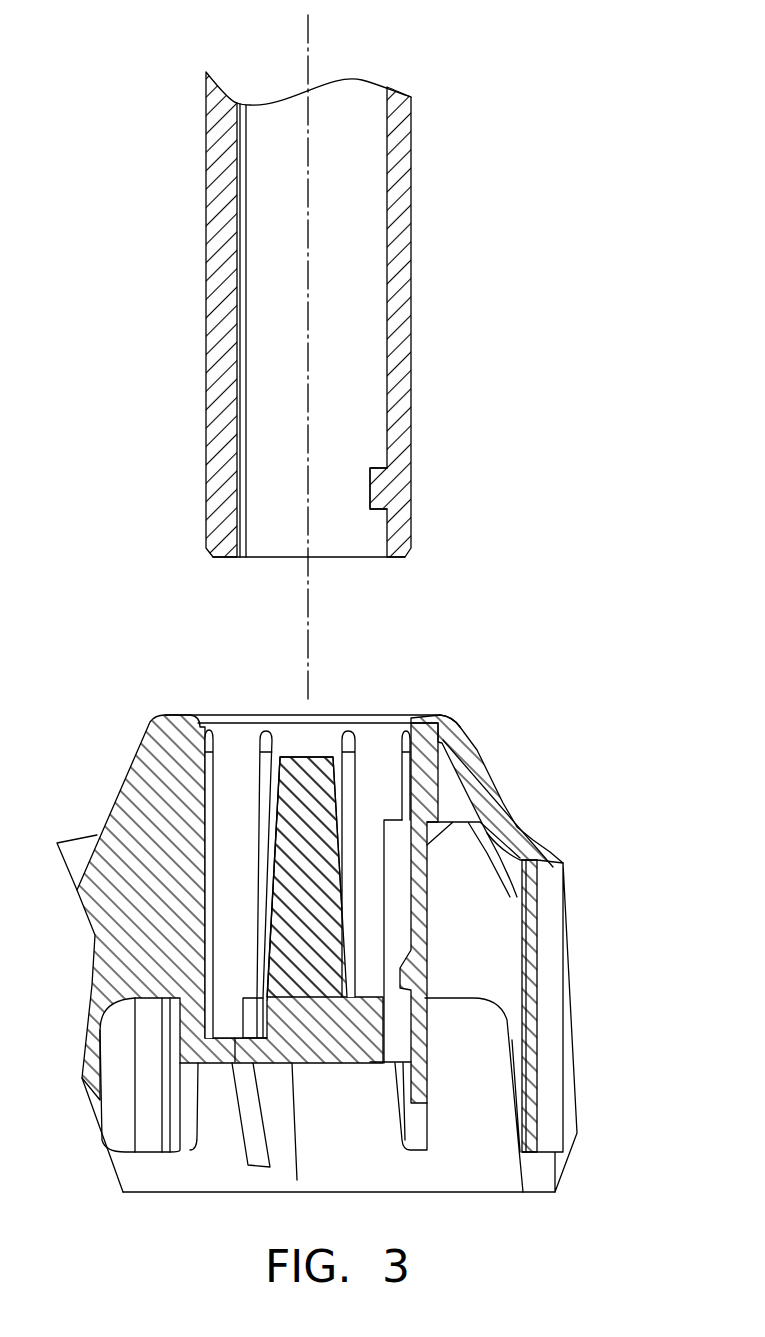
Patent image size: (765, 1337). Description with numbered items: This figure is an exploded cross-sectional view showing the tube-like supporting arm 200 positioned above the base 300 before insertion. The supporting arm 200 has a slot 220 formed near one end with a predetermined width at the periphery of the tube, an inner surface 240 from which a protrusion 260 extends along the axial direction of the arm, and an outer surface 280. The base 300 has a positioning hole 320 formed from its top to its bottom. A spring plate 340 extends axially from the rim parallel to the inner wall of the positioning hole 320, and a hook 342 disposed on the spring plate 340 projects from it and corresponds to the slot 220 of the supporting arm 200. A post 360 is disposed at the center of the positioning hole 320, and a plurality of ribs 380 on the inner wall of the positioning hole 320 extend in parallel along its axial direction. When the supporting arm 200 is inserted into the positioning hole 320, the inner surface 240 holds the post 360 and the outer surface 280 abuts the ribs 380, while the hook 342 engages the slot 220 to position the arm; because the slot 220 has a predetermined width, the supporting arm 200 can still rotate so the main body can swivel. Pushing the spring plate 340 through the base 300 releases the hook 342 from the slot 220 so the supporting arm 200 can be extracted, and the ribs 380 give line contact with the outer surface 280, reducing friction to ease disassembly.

The supporting arm 200 is at (309, 278).
The slot 220 is at (400, 487).
The inner surface 240 is at (388, 130).
The protrusion 260 is at (246, 104).
The outer surface 280 is at (206, 296).
The base 300 is at (358, 932).
The positioning hole 320 is at (236, 750).
The spring plate 340 is at (418, 880).
The hook 342 is at (405, 985).
The post 360 is at (320, 757).
The ribs 380 is at (268, 755).